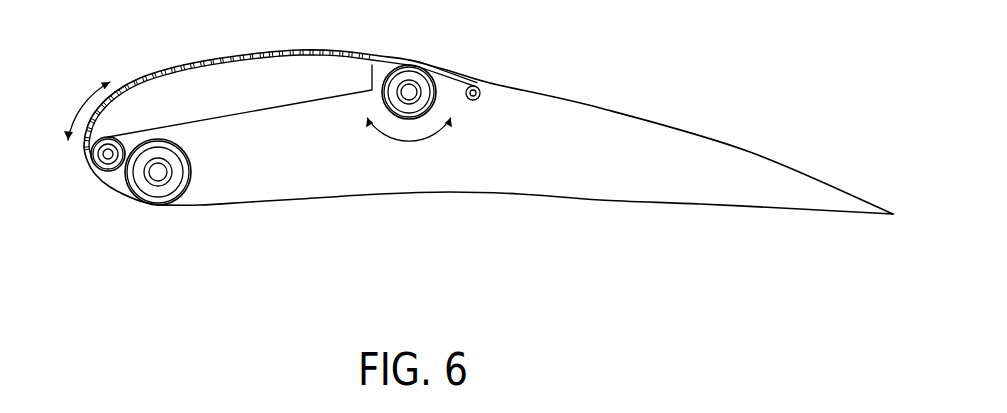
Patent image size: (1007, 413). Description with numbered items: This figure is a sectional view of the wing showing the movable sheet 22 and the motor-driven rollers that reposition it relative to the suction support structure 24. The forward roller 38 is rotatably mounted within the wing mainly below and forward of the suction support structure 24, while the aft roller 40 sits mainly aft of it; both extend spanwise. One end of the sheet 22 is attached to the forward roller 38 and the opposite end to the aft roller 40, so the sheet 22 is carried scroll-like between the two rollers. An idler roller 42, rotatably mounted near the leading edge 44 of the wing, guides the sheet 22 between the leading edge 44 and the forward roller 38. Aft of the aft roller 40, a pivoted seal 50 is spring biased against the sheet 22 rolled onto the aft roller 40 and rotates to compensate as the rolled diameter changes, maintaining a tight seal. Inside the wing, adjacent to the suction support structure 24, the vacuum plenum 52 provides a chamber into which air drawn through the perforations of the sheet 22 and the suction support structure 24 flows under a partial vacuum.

The sheet 22 is at (280, 81).
The suction support structure 24 is at (504, 108).
The forward roller 38 is at (186, 197).
The aft roller 40 is at (387, 115).
The idler roller 42 is at (126, 222).
The leading edge 44 is at (95, 149).
The pivoted seal 50 is at (514, 112).
The vacuum plenum 52 is at (240, 103).